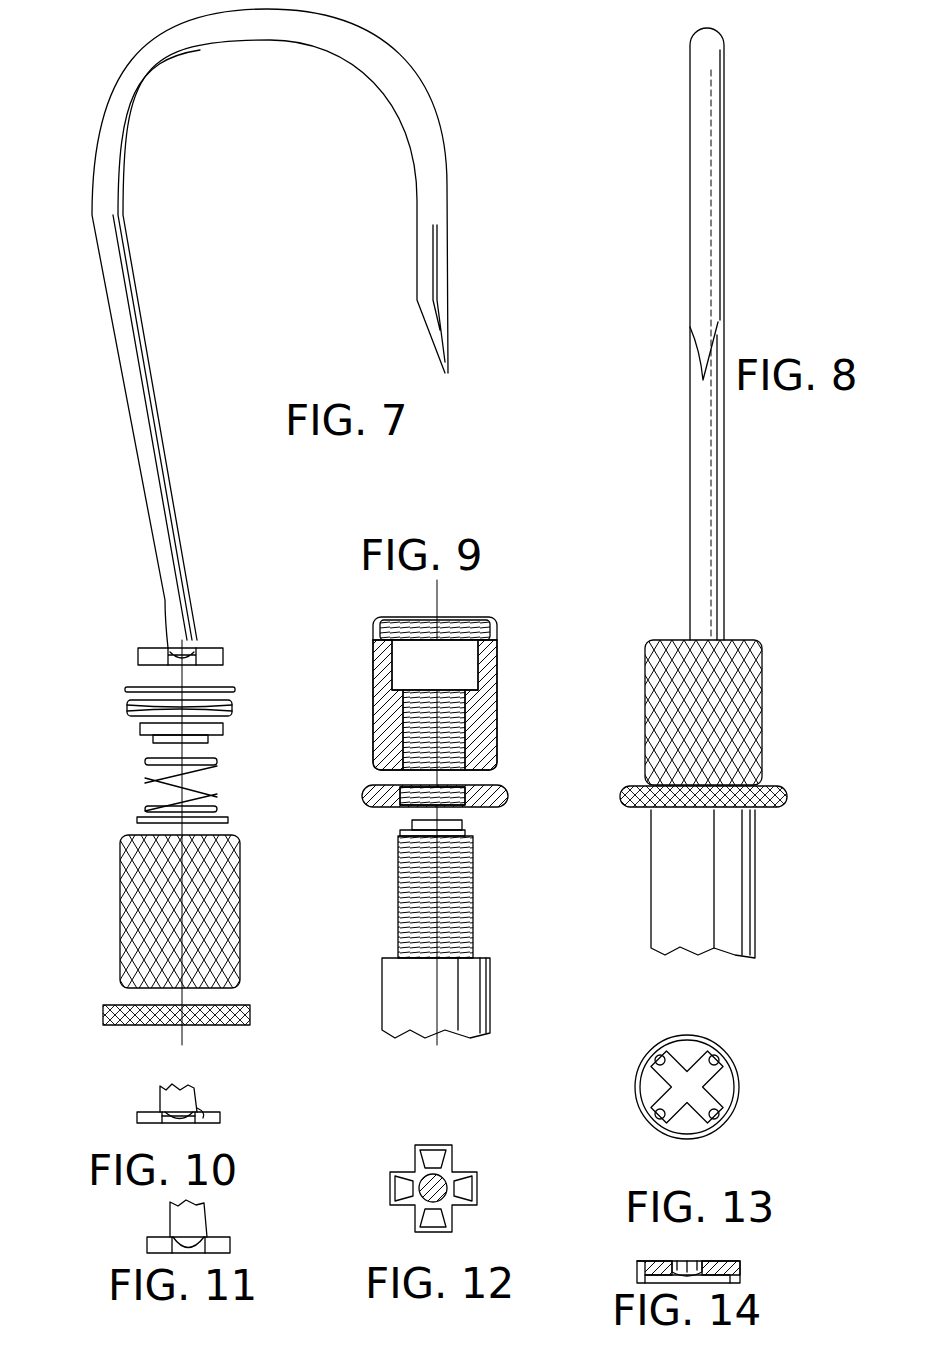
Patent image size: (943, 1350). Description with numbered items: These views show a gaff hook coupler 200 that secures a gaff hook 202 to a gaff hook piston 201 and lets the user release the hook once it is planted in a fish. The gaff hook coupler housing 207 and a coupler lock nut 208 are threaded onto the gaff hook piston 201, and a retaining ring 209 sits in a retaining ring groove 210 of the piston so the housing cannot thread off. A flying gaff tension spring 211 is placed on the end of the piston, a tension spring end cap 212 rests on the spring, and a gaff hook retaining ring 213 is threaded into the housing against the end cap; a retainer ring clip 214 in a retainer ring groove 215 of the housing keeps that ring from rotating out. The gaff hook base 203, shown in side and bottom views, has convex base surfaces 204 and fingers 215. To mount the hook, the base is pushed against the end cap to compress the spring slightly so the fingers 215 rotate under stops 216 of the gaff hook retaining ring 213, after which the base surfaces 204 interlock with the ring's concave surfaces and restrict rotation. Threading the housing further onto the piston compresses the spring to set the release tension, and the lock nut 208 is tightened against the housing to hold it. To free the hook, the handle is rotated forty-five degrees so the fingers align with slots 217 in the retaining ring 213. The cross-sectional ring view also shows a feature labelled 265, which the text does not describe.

In FIG. 8, the gaff hook coupler 200 is at (752, 735).
In FIG. 8, the gaff hook piston 201 is at (737, 893).
In FIG. 9, the gaff hook piston 201 is at (474, 1002).
In FIG. 7, the gaff hook 202 is at (157, 462).
In FIG. 8, the gaff hook 202 is at (705, 535).
In FIG. 7, the gaff hook base 203 is at (200, 645).
In FIG. 10, the gaff hook base 203 is at (200, 1112).
In FIG. 11, the gaff hook base 203 is at (205, 1237).
In FIG. 12, the gaff hook base 203 is at (440, 1160).
In FIG. 10, the base surfaces 204 is at (170, 1122).
In FIG. 7, the gaff hook coupler housing 207 is at (125, 900).
In FIG. 9, the gaff hook coupler housing 207 is at (461, 671).
In FIG. 7, the coupler lock nut 208 is at (103, 1012).
In FIG. 9, the coupler lock nut 208 is at (505, 788).
In FIG. 7, the retaining ring 209 is at (140, 817).
In FIG. 9, the retaining ring groove 210 is at (470, 830).
In FIG. 7, the flying gaff tension spring 211 is at (217, 770).
In FIG. 7, the tension spring end cap 212 is at (140, 727).
In FIG. 7, the gaff hook retaining ring 213 is at (230, 708).
In FIG. 13, the gaff hook retaining ring 213 is at (695, 1035).
In FIG. 14, the gaff hook retaining ring 213 is at (740, 1272).
In FIG. 7, the retainer ring clip 214 is at (232, 689).
In FIG. 9, the fingers 215 is at (487, 620).
In FIG. 12, the fingers 215 is at (420, 1158).
In FIG. 13, the stops 216 is at (690, 1055).
In FIG. 13, the slots 217 is at (660, 1055).
In FIG. 14, the dimple 265 is at (688, 1262).